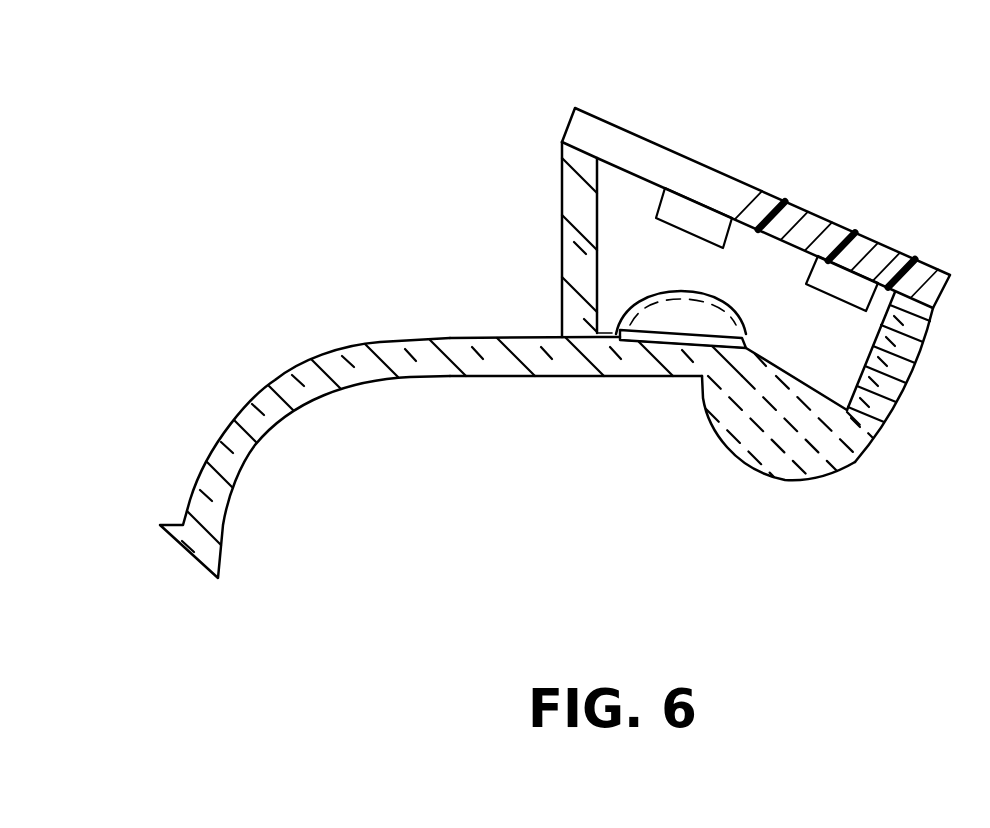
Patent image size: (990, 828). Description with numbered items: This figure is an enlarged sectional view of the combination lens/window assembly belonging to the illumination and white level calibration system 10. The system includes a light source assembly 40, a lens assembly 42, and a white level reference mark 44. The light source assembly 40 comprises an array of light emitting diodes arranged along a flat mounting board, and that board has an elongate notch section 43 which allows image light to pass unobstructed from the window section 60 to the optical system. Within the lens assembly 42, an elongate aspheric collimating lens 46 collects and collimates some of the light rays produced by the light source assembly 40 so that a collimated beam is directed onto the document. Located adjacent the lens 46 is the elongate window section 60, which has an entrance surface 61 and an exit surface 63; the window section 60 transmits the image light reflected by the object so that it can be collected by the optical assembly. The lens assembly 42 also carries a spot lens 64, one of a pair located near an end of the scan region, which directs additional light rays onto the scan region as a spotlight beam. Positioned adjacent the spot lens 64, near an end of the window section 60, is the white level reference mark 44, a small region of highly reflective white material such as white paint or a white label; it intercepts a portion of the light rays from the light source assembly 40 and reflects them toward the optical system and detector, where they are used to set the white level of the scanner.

The illumination and white level calibration system 10 is at (264, 87).
The light source assembly 40 is at (598, 100).
The lens assembly 42 is at (210, 414).
The elongate notch section 43 is at (760, 203).
The white level reference mark 44 is at (740, 333).
The elongate aspheric collimating lens 46 is at (797, 481).
The window section 60 is at (631, 393).
The entrance surface 61 is at (660, 378).
The exit surface 63 is at (612, 333).
The spot lens 64 is at (676, 292).